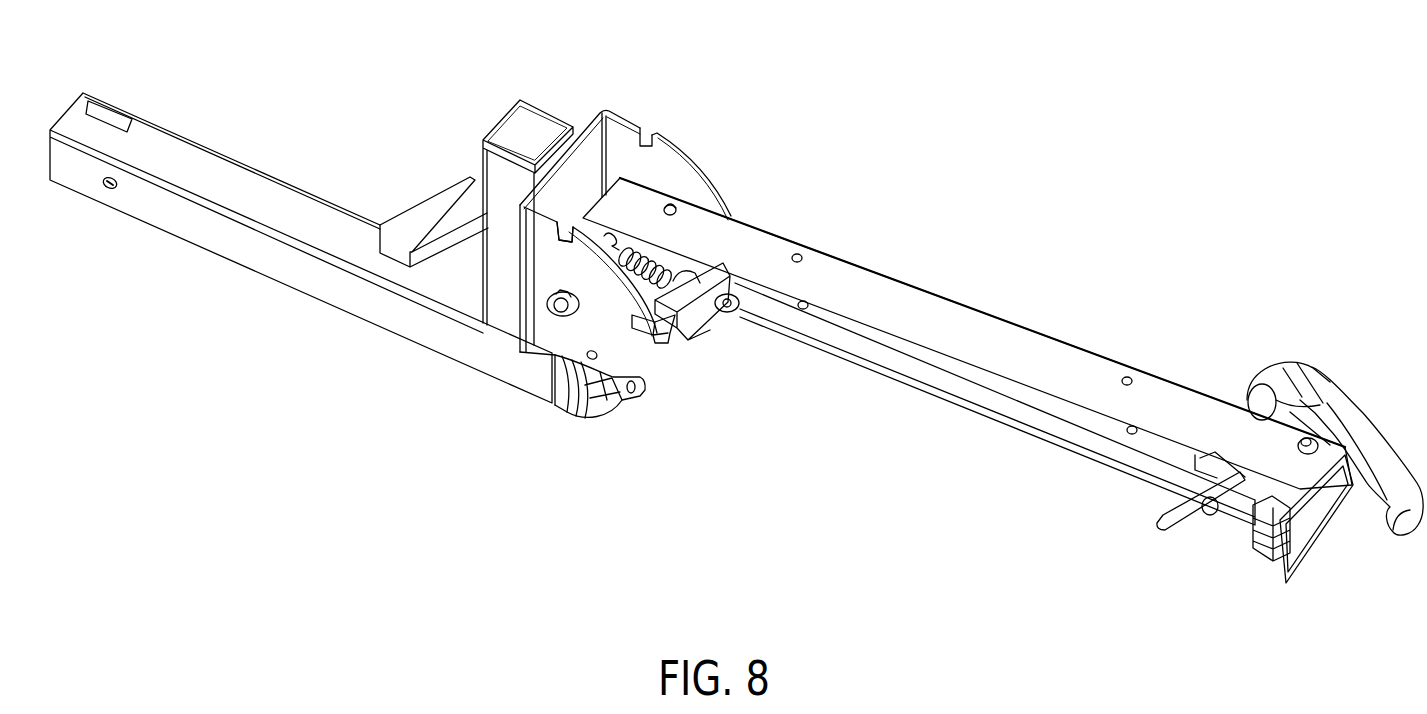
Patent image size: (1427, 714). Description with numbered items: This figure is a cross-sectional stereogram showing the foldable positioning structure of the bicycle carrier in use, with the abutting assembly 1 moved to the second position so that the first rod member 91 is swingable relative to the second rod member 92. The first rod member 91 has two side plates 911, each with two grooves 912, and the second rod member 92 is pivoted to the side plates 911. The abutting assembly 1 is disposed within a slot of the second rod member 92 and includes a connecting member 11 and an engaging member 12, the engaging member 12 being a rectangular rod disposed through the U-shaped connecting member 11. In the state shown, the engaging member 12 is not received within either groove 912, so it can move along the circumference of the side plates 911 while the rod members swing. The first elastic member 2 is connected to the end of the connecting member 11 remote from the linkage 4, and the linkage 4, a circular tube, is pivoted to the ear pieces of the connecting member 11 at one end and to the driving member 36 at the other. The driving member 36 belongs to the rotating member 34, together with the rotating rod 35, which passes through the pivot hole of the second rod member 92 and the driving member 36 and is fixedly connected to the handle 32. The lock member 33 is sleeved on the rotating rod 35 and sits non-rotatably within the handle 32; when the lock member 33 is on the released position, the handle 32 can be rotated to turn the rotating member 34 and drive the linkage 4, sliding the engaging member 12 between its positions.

The abutting assembly 1 is at (685, 402).
The first elastic member 2 is at (650, 267).
The linkage 4 is at (860, 348).
The connecting member 11 is at (707, 322).
The engaging member 12 is at (660, 343).
The handle 32 is at (1292, 370).
The lock member 33 is at (1257, 387).
The rotating member 34 is at (1255, 567).
The rotating rod 35 is at (1210, 517).
The driving member 36 is at (1240, 540).
The first rod member 91 is at (220, 160).
The second rod member 92 is at (920, 300).
The side plate 911 is at (678, 147).
The groove 912 is at (643, 143).